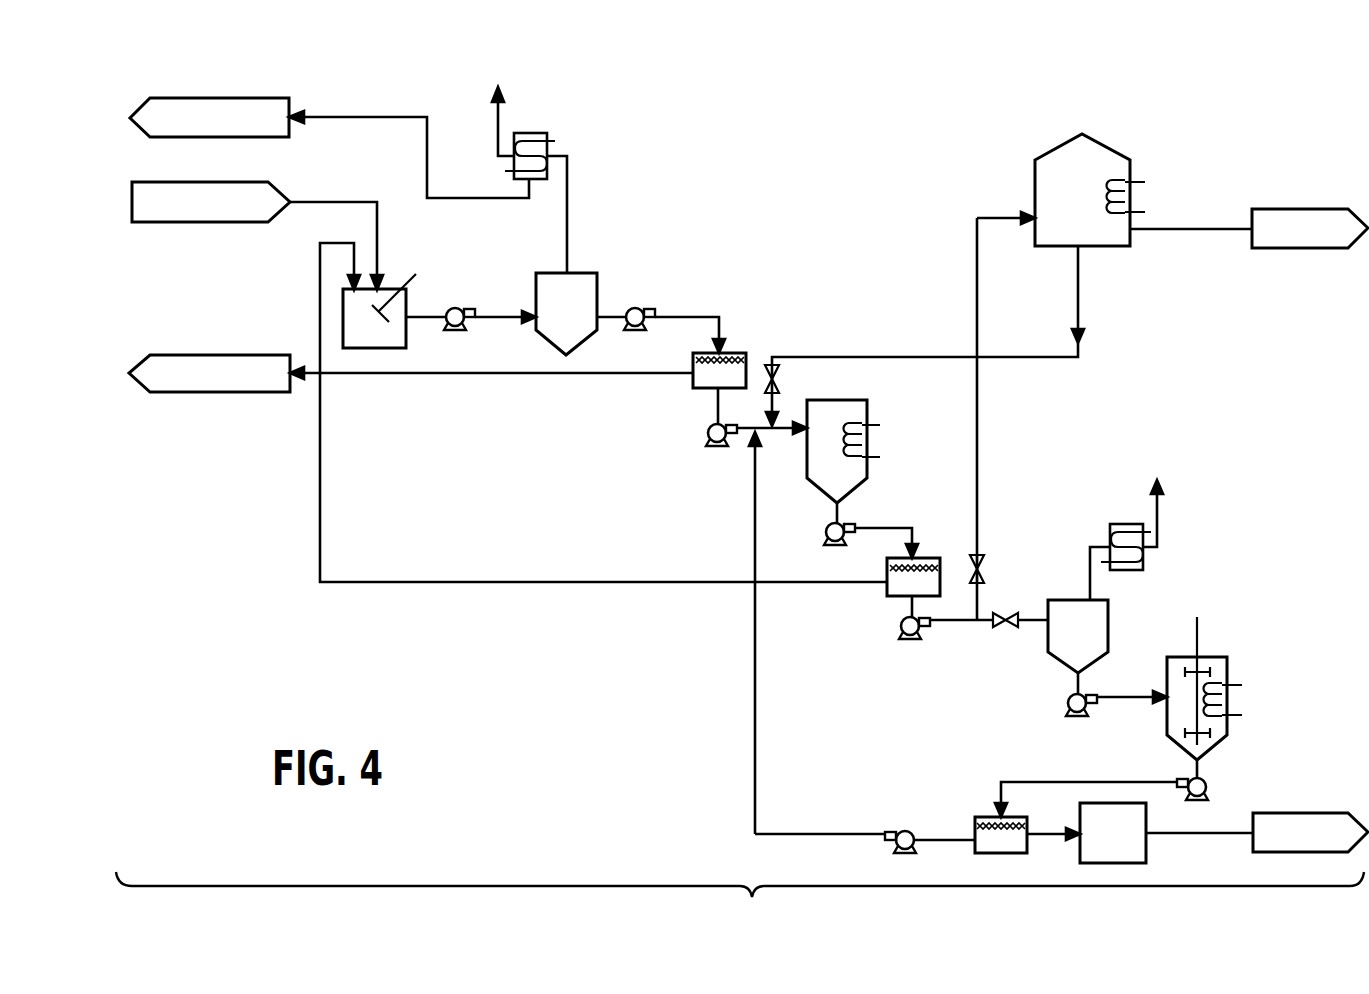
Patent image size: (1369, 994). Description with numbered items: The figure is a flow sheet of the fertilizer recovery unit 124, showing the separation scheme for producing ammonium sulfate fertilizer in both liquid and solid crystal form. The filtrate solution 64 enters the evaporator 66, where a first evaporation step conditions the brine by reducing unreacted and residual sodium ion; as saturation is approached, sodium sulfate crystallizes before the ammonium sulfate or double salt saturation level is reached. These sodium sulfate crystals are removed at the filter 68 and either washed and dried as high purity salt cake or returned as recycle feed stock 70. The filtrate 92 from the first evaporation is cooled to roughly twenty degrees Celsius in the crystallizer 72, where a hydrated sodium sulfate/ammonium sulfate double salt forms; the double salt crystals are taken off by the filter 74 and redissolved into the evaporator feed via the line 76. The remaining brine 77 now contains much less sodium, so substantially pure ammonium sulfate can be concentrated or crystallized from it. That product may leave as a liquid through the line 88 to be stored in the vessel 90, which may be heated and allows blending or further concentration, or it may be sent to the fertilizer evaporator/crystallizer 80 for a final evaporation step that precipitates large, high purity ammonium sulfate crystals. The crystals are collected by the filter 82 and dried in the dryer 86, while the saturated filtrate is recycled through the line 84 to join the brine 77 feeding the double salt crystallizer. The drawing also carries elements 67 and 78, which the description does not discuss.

The filtrate solution 64 is at (200, 223).
The evaporator 66 is at (602, 283).
The vent line 67 is at (375, 117).
The filter 68 is at (747, 363).
The recycle feed stock 70 is at (205, 394).
The crystallizer 72 is at (868, 412).
The filter 74 is at (933, 557).
The line 76 is at (537, 584).
The brine 77 is at (955, 623).
The evaporator 78 is at (1106, 618).
The fertilizer evaporator/crystallizer 80 is at (1229, 672).
The filter 82 is at (974, 820).
The line 84 is at (753, 741).
The dryer 86 is at (1148, 821).
The line 88 is at (975, 317).
The vessel 90 is at (1035, 184).
The filtrate 92 is at (712, 414).
The fertilizer recovery unit 124 is at (740, 907).